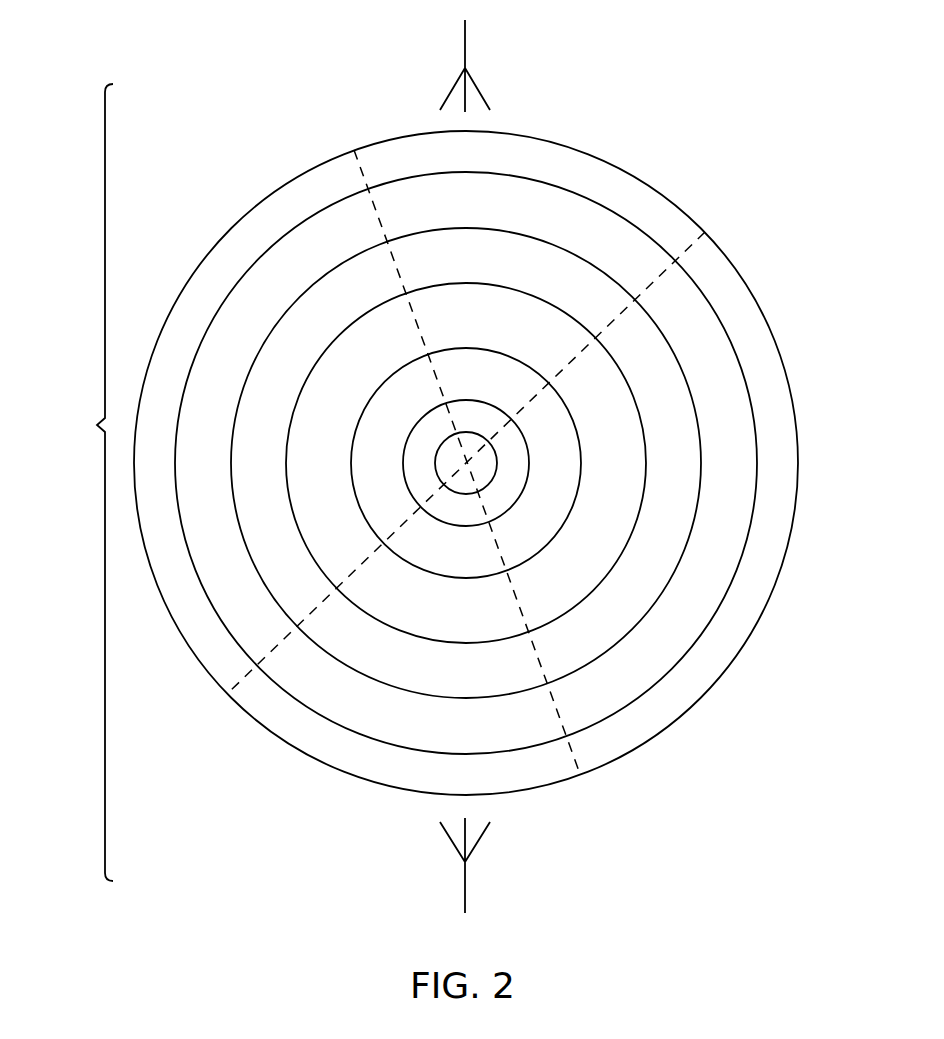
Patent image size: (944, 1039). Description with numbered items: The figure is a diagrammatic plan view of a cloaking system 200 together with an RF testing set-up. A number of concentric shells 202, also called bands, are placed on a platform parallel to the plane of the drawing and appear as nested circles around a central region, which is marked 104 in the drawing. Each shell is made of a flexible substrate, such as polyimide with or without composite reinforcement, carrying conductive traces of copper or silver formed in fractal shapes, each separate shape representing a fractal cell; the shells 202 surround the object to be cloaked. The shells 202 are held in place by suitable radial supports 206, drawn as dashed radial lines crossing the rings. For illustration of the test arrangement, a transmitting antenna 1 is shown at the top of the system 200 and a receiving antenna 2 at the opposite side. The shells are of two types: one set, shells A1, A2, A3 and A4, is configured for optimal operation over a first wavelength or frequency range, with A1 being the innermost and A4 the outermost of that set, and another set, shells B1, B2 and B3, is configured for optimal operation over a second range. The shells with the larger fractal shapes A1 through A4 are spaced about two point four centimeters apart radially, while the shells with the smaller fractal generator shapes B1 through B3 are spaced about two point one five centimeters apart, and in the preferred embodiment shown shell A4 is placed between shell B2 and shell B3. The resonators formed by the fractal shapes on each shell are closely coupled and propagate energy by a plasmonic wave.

The cloaking system 200 is at (205, 72).
The concentric shells 202 is at (79, 482).
The radial supports 206 is at (365, 172).
The base station 104 is at (485, 476).
The transmitting antenna 1 is at (465, 43).
The receiving antenna 2 is at (465, 900).
The shell B1 is at (478, 433).
The shell B2 is at (508, 514).
The shell B3 is at (568, 612).
The shell A1 is at (533, 559).
The shell A2 is at (585, 668).
The shell A3 is at (665, 677).
The shell A4 is at (670, 727).